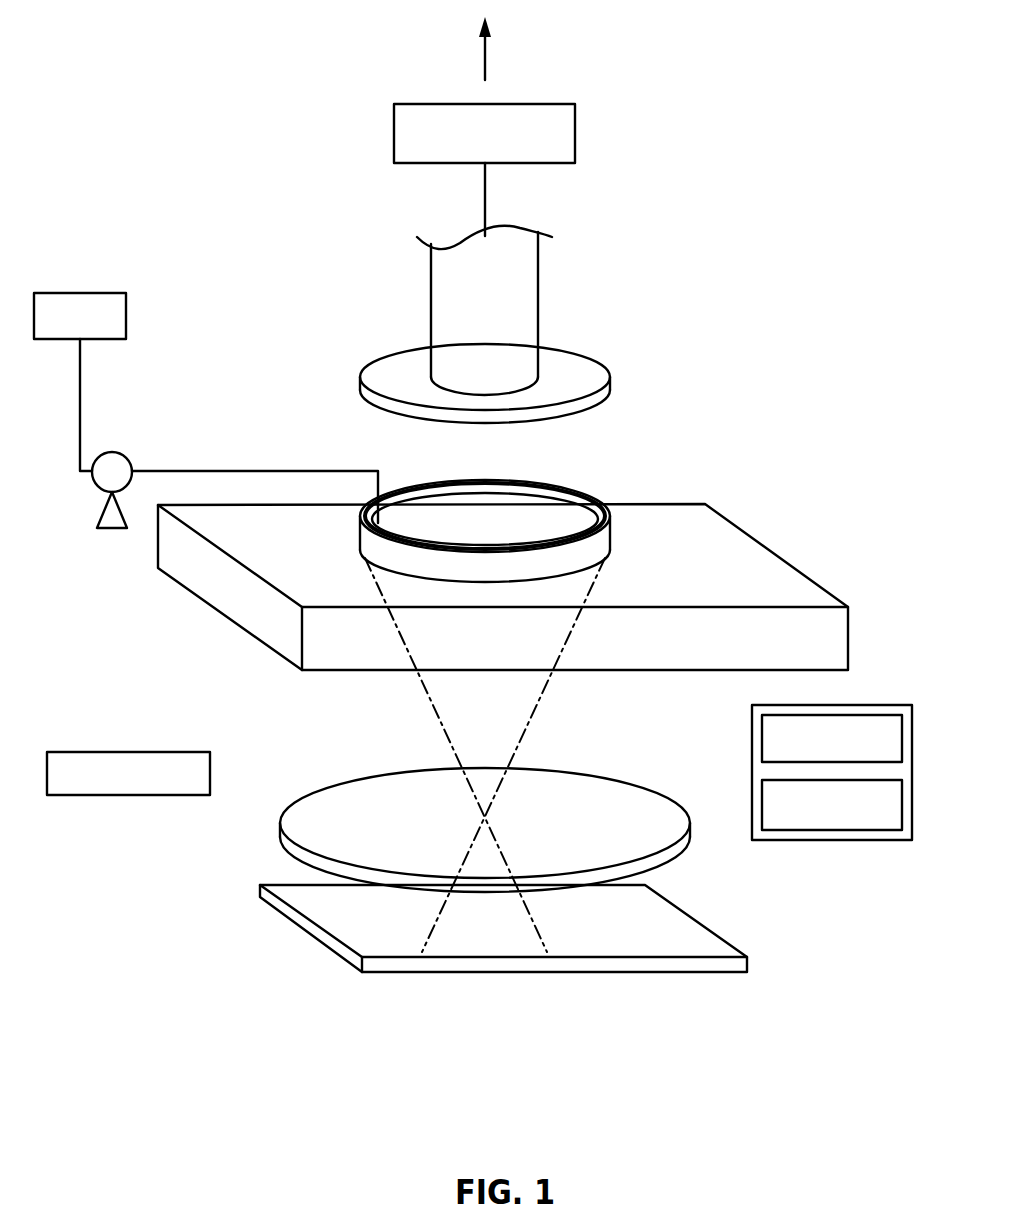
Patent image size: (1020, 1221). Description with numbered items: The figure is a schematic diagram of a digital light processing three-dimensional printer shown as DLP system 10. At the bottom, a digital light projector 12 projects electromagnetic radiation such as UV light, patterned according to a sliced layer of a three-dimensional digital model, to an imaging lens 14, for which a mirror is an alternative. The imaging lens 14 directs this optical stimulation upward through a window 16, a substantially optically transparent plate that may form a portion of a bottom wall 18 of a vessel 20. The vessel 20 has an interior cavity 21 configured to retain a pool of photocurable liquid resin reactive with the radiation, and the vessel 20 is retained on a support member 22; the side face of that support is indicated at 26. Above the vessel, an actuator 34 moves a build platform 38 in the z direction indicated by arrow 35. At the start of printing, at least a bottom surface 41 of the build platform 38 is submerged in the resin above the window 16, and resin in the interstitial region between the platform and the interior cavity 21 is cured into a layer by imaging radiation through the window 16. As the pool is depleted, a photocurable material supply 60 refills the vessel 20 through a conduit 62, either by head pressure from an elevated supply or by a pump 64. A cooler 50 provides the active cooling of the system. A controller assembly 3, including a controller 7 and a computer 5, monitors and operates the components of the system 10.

The controller assembly 3 is at (810, 794).
The computer 5 is at (762, 806).
The controller 7 is at (762, 742).
The DLP system 10 is at (563, 64).
The digital light projector 12 is at (320, 905).
The imaging lens 14 is at (305, 814).
The window 16 is at (457, 527).
The bottom wall 18 is at (577, 515).
The vessel 20 is at (610, 568).
The interior cavity 21 is at (418, 488).
The support member 22 is at (208, 585).
The plate side surface 26 is at (318, 607).
The actuator 34 is at (575, 133).
The arrow 35 is at (483, 56).
The build platform 38 is at (583, 380).
The bottom surface 41 is at (552, 425).
The cooler 50 is at (124, 810).
The photocurable material supply 60 is at (90, 293).
The conduit 62 is at (160, 471).
The pump 64 is at (110, 532).